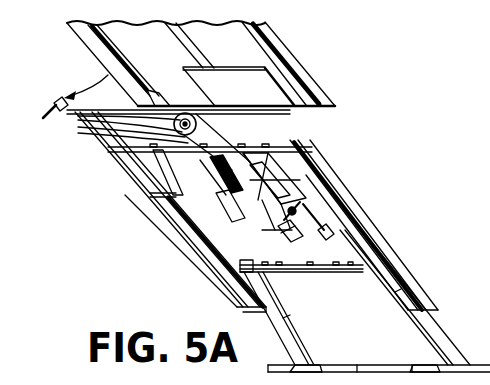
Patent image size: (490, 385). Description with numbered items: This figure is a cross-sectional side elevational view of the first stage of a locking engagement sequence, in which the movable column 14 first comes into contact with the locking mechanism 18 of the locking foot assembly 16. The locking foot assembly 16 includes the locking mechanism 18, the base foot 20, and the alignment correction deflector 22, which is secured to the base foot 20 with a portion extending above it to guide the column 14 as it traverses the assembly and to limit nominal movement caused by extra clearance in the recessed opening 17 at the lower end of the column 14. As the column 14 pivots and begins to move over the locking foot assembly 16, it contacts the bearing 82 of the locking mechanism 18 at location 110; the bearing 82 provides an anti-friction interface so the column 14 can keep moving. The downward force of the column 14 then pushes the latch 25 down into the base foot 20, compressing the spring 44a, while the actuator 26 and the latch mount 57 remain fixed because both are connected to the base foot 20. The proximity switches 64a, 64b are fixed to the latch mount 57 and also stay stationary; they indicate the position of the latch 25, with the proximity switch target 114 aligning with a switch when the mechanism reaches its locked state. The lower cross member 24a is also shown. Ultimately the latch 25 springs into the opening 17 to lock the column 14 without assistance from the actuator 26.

The movable column 14 is at (300, 62).
The locking foot assembly 16 is at (178, 280).
The recessed opening 17 is at (263, 88).
The locking mechanism 18 is at (152, 150).
The base foot 20 is at (397, 253).
The alignment correction deflector 22 is at (163, 149).
The lower cross member 24a is at (258, 143).
The latch 25 is at (150, 128).
The actuator 26 is at (275, 190).
The spring 44a is at (178, 193).
The latch mount 57 is at (283, 173).
The proximity switch 64a is at (296, 210).
The proximity switch 64b is at (323, 226).
The bearing 82 is at (128, 120).
The location 110 is at (60, 117).
The proximity switch target 114 is at (292, 248).